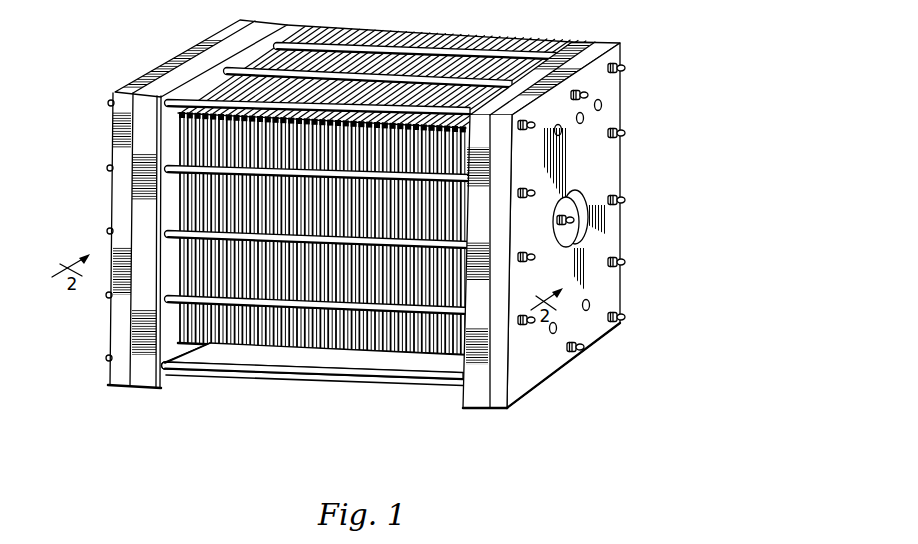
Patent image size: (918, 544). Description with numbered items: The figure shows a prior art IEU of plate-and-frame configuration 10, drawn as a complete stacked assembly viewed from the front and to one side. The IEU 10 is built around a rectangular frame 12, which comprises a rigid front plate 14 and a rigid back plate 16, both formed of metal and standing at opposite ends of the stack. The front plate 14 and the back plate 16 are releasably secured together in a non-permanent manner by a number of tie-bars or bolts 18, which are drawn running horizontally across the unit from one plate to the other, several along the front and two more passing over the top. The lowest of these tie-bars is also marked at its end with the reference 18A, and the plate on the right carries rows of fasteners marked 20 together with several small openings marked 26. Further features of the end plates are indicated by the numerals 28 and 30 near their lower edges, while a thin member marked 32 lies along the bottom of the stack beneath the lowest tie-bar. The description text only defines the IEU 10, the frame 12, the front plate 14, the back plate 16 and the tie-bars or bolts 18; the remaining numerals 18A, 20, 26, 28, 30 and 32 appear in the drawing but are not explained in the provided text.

The IEU of plate-and-frame configuration 10 is at (516, 37).
The rectangular frame 12 is at (152, 82).
The front plate 14 is at (497, 401).
The back plate 16 is at (115, 380).
The tie-bars or bolts 18 is at (385, 45).
The tie rod end 18A is at (170, 378).
The fastening nuts 20 is at (620, 63).
The fluid ports 26 is at (592, 304).
The lower edge of second end plate 28 is at (473, 401).
The front face of first end plate 30 is at (143, 380).
The bottom support plate 32 is at (345, 358).